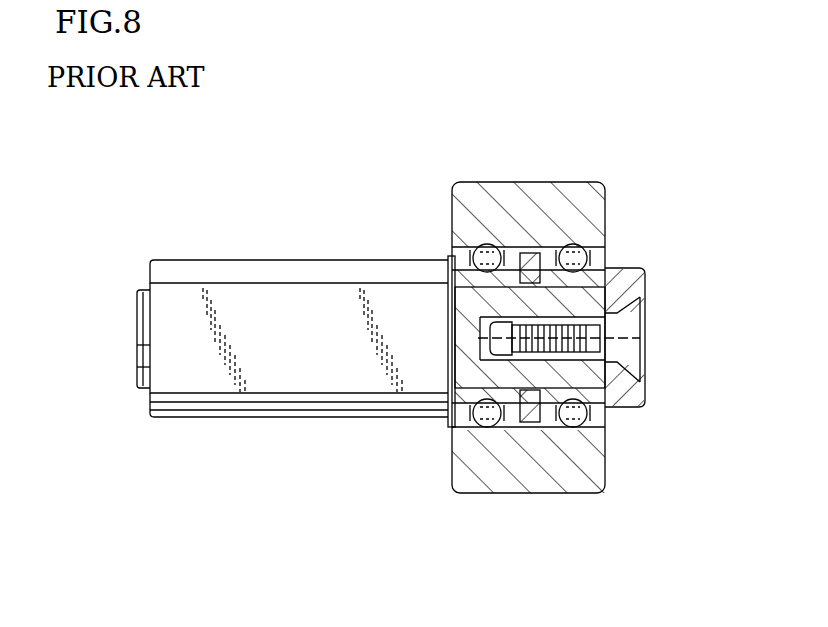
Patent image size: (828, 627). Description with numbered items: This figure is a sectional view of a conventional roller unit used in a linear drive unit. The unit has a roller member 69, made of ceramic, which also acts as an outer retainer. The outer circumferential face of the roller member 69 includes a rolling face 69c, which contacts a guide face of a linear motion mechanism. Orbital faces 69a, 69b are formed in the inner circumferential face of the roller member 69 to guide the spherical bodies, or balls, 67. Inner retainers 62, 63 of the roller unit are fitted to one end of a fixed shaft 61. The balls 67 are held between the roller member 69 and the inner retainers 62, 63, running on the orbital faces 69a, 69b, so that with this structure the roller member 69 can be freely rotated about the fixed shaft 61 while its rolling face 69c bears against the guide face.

The fixed shaft 61 is at (202, 383).
The inner retainer 62 is at (453, 298).
The inner retainer 63 is at (640, 303).
The spherical bodies 67 is at (480, 250).
The roller member 69 is at (538, 340).
The orbital face 69a is at (484, 440).
The orbital face 69b is at (560, 440).
The rolling face 69c is at (596, 182).